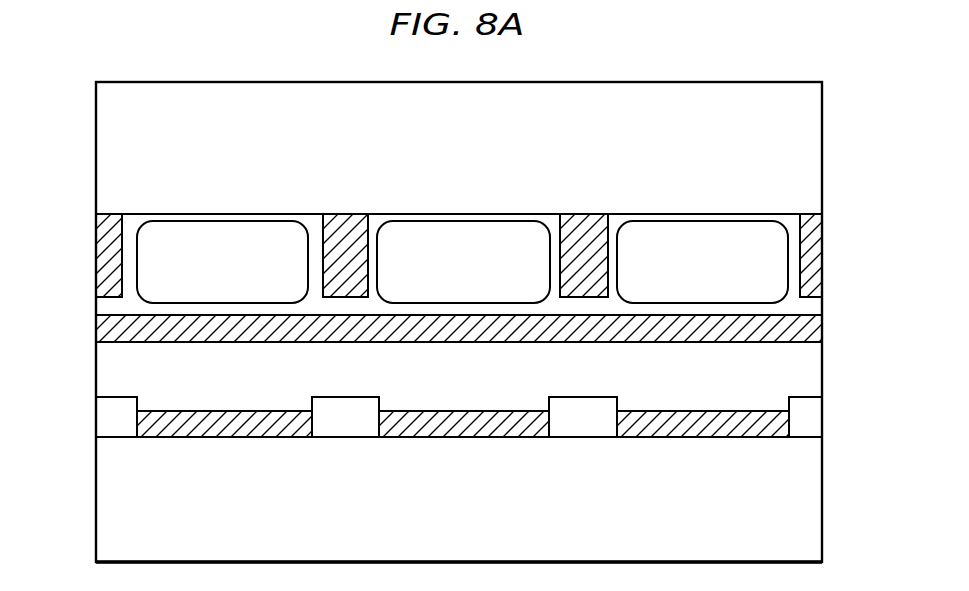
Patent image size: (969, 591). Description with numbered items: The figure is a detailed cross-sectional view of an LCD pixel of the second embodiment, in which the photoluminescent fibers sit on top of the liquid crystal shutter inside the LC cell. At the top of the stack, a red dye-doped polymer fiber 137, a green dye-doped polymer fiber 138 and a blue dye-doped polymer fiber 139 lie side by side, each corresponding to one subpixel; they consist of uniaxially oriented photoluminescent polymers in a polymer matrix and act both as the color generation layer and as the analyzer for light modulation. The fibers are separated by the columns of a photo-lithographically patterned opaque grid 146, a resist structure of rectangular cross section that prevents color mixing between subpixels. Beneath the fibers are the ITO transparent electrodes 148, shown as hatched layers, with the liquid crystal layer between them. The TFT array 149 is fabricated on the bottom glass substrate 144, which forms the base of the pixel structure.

The red dye-doped polymer fiber 137 is at (222, 221).
The green dye-doped polymer fiber 138 is at (457, 221).
The blue dye-doped polymer fiber 139 is at (695, 221).
The bottom glass substrate 144 is at (822, 522).
The opaque grid 146 is at (96, 248).
The ITO transparent electrodes 148 is at (688, 342).
The TFT array 149 is at (118, 437).